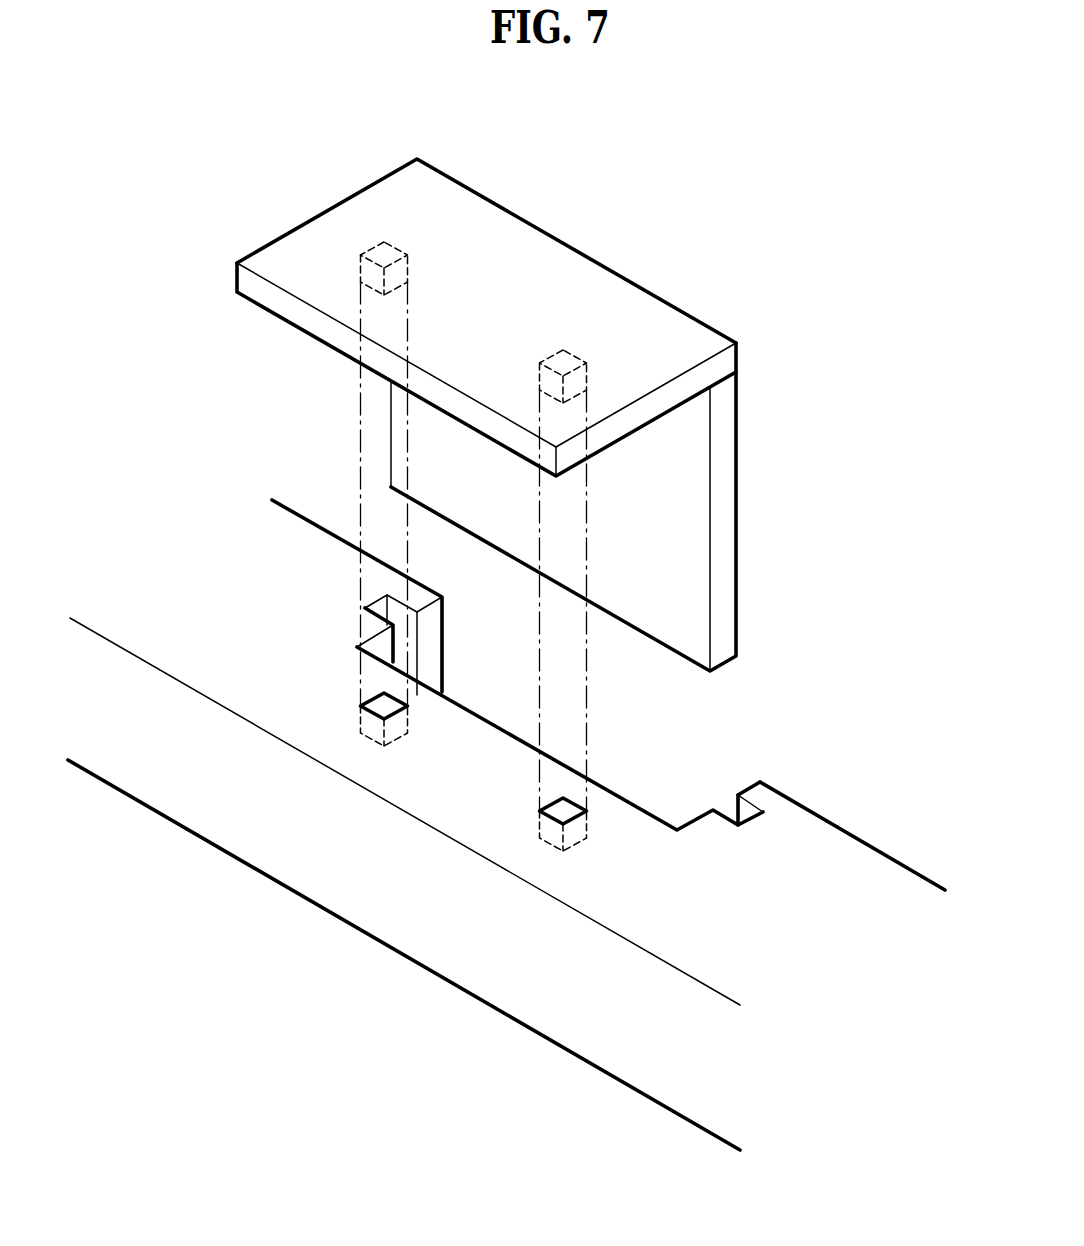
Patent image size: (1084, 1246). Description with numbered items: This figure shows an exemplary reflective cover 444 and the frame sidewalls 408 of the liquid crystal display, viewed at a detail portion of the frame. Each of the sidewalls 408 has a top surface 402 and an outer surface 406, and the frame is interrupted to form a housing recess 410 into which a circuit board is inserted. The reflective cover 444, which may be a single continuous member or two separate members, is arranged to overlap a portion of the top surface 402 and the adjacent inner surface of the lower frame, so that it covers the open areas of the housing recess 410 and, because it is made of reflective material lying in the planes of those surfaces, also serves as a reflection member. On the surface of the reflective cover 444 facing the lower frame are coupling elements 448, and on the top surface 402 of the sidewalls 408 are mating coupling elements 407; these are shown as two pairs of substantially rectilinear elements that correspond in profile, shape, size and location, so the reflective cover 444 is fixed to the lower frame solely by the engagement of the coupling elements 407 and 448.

The top surface 402 is at (182, 638).
The outer surface 406 is at (262, 782).
The coupling elements 407 is at (562, 812).
The sidewalls 408 is at (805, 838).
The housing recess 410 is at (605, 763).
The reflective cover 444 is at (713, 402).
The coupling elements 448 is at (565, 352).